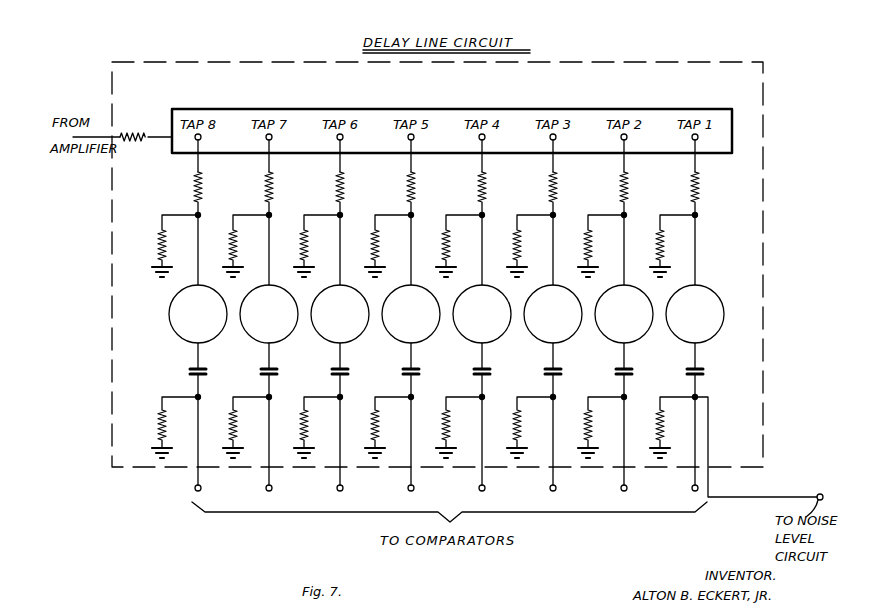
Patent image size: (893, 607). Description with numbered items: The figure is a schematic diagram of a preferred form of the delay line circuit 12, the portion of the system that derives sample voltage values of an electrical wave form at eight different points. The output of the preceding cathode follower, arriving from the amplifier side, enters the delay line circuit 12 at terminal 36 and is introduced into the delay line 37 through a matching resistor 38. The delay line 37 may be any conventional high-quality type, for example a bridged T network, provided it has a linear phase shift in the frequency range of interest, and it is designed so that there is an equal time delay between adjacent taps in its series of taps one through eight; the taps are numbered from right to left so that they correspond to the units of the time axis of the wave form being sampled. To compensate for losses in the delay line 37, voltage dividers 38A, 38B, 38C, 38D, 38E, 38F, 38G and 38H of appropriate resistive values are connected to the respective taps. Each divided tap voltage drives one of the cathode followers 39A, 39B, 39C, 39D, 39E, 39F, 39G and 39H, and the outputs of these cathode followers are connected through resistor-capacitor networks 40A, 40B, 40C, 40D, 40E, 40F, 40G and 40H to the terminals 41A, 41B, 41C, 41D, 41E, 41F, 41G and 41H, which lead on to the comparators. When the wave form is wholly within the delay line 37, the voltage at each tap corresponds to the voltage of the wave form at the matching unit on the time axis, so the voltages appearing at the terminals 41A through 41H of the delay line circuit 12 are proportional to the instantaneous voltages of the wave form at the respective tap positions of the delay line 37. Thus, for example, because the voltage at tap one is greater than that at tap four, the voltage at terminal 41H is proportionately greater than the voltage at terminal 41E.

The delay line circuit 12 is at (273, 68).
The terminal 36 is at (78, 132).
The delay line 37 is at (238, 117).
The matching resistor 38 is at (130, 135).
The voltage divider 38A is at (199, 214).
The voltage divider 38B is at (270, 214).
The voltage divider 38C is at (341, 214).
The voltage divider 38D is at (412, 214).
The voltage divider 38E is at (483, 214).
The voltage divider 38F is at (554, 214).
The voltage divider 38G is at (625, 214).
The voltage divider 38H is at (696, 214).
The cathode follower 39A is at (205, 340).
The cathode follower 39B is at (276, 340).
The cathode follower 39C is at (347, 340).
The cathode follower 39D is at (418, 340).
The cathode follower 39E is at (489, 340).
The cathode follower 39F is at (560, 340).
The cathode follower 39G is at (631, 340).
The cathode follower 39H is at (702, 340).
The resistor-capacitor network 40A is at (160, 418).
The resistor-capacitor network 40B is at (231, 418).
The resistor-capacitor network 40C is at (302, 418).
The resistor-capacitor network 40D is at (373, 418).
The resistor-capacitor network 40E is at (444, 418).
The resistor-capacitor network 40F is at (515, 418).
The resistor-capacitor network 40G is at (586, 418).
The resistor-capacitor network 40H is at (658, 418).
The terminal 41A is at (201, 490).
The terminal 41B is at (272, 490).
The terminal 41C is at (343, 490).
The terminal 41D is at (414, 490).
The terminal 41E is at (485, 490).
The terminal 41F is at (556, 490).
The terminal 41G is at (627, 490).
The terminal 41H is at (698, 488).